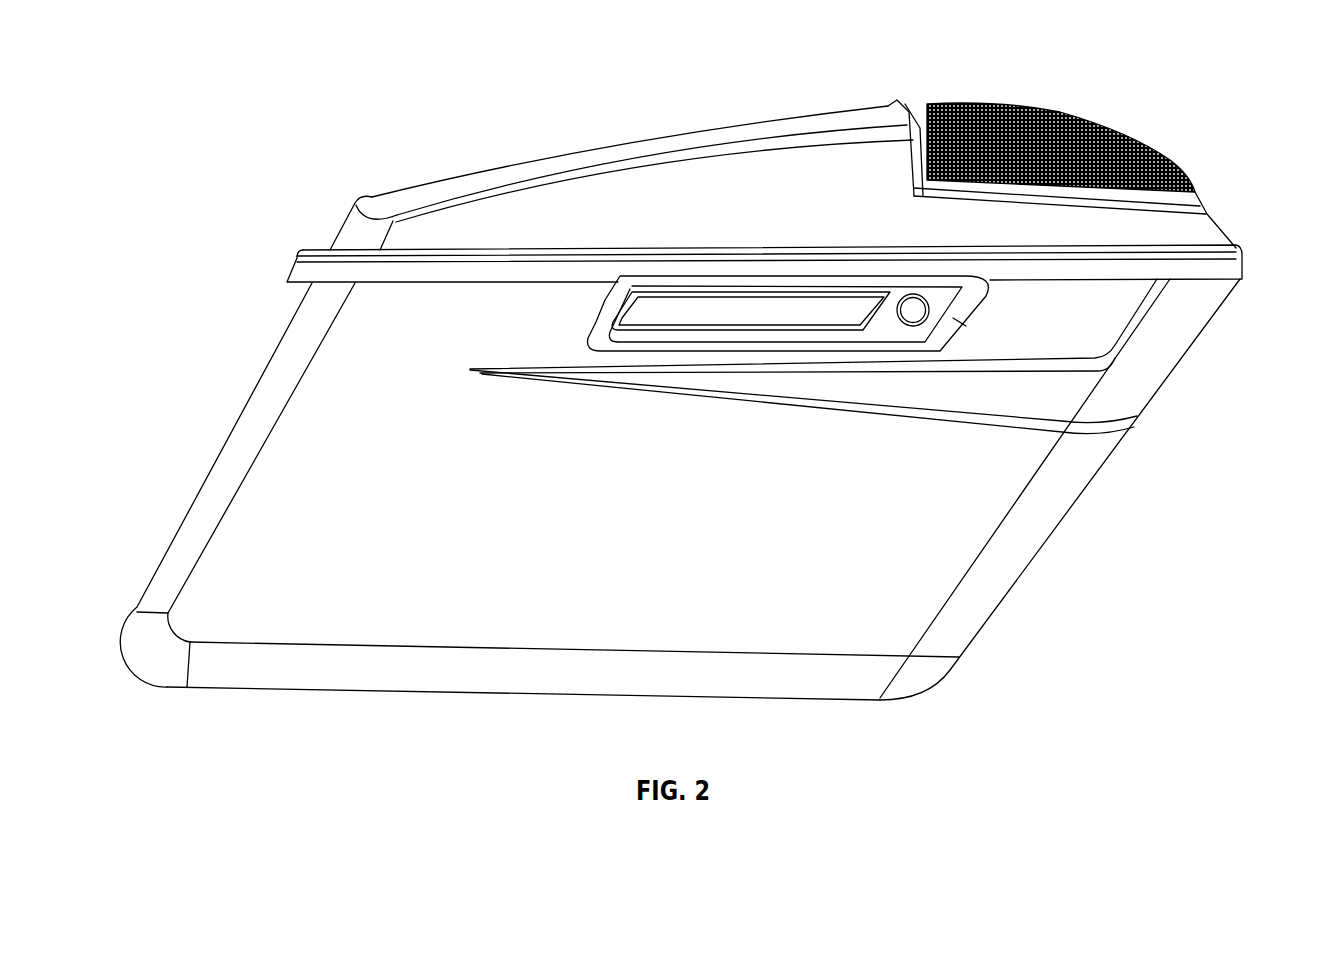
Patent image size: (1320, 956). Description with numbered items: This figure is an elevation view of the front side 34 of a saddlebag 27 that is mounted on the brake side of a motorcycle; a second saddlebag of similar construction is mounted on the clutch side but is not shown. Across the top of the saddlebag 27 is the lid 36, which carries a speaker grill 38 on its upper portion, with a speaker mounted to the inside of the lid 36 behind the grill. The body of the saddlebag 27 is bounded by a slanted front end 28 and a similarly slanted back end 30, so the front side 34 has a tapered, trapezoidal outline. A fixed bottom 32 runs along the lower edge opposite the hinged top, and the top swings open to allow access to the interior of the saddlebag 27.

The saddlebag 27 is at (668, 133).
The front end 28 is at (984, 606).
The back end 30 is at (190, 508).
The fixed bottom 32 is at (513, 697).
The front side 34 is at (982, 510).
The lid 36 is at (1195, 227).
The speaker grill 38 is at (1080, 116).